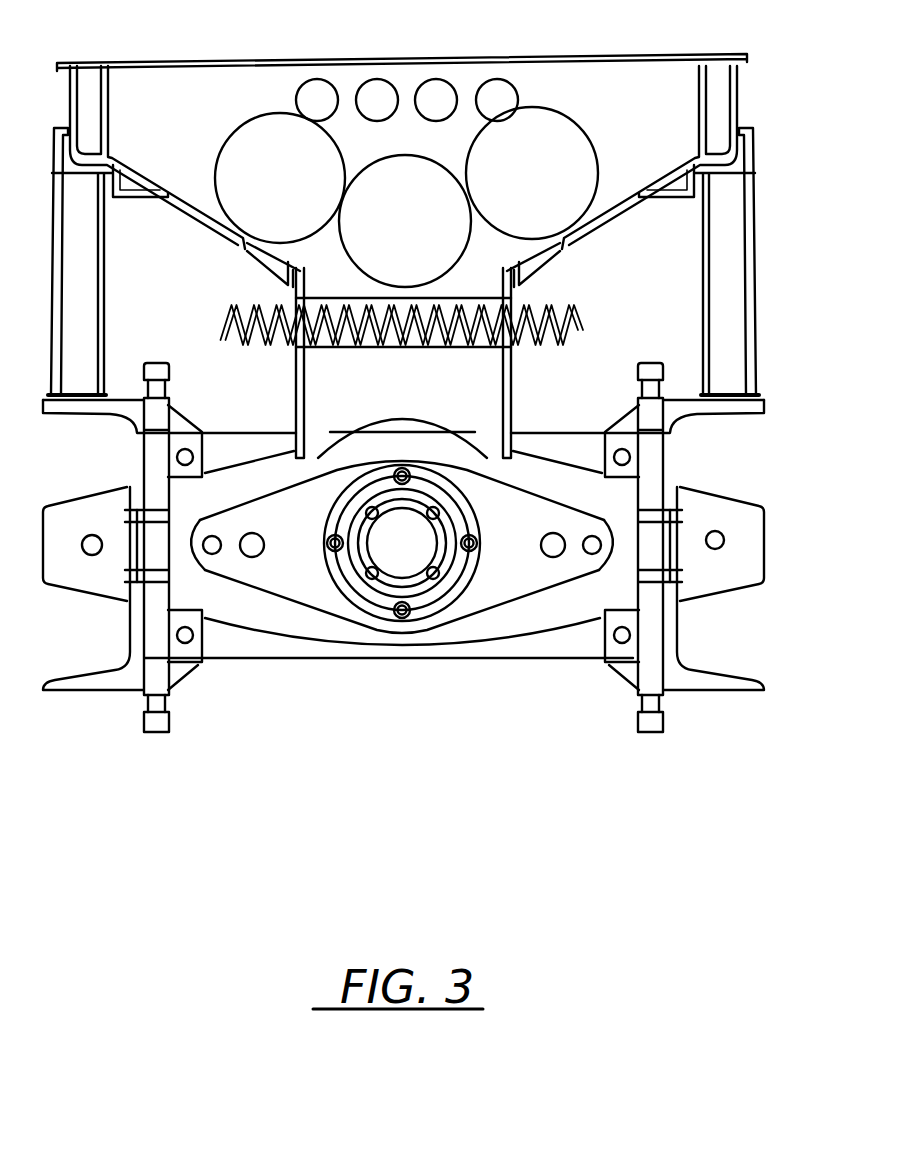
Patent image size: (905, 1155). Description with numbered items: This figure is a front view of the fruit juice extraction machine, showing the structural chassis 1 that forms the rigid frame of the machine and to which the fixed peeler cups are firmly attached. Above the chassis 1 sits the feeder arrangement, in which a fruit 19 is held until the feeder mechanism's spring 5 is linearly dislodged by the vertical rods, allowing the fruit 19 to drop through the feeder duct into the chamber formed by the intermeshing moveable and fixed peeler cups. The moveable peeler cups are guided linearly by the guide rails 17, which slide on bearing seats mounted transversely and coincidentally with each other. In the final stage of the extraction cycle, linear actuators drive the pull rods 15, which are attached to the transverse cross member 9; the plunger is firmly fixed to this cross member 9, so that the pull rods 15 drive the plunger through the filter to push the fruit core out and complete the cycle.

The structural chassis 1 is at (771, 665).
The feeder mechanism's spring 5 is at (582, 303).
The transverse cross member 9 is at (731, 490).
The pull rods 15 is at (84, 553).
The guide rails 17 is at (246, 557).
The fruit 19 is at (552, 110).